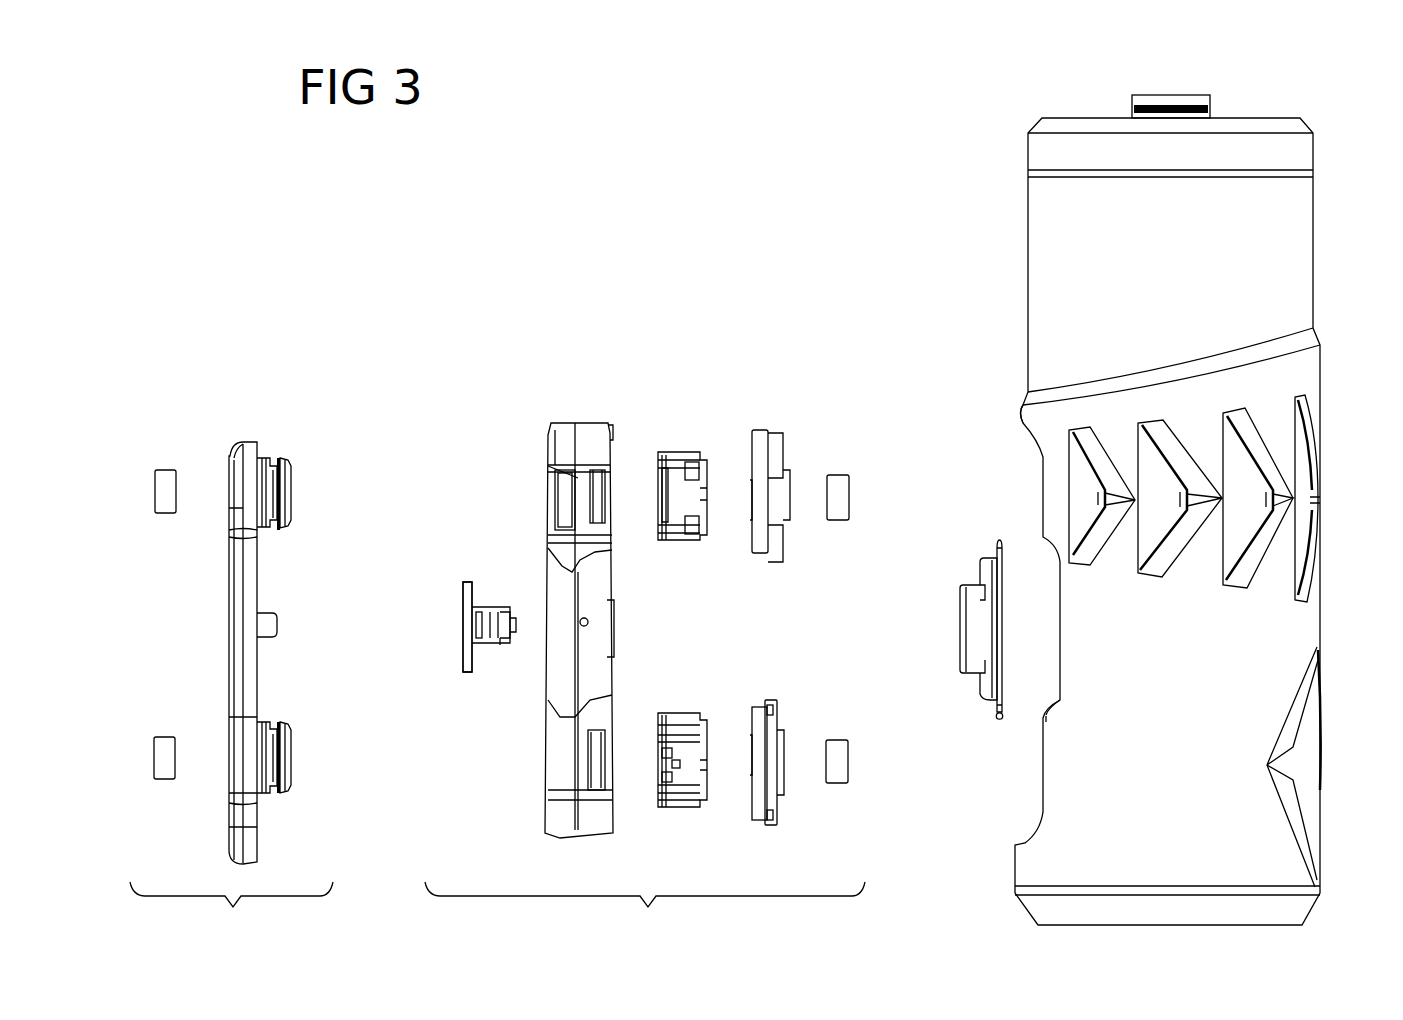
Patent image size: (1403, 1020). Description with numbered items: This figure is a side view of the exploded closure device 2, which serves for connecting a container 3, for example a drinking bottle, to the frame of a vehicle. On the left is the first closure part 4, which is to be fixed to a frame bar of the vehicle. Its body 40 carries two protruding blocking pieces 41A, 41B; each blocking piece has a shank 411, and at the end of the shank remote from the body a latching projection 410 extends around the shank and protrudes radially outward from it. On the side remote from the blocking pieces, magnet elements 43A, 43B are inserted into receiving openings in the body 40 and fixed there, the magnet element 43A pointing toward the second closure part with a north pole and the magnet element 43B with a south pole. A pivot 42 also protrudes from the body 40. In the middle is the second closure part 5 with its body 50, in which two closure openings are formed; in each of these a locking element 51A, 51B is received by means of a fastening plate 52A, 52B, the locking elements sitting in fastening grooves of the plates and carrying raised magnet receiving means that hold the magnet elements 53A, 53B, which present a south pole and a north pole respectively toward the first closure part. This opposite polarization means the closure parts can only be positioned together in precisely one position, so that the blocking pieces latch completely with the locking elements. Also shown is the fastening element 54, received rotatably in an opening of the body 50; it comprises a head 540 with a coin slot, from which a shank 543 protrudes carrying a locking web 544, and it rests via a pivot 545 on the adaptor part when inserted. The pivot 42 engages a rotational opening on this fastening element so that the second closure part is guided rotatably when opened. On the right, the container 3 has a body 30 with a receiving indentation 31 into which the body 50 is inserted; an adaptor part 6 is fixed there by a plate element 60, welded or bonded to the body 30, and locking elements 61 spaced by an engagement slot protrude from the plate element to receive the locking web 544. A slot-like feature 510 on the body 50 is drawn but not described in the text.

The closure device 2 is at (646, 282).
The container 3 is at (1297, 272).
The body 30 is at (1290, 621).
The receiving indentation 31 is at (1023, 430).
The first closure part 4 is at (231, 913).
The body 40 is at (237, 452).
The blocking piece 41A is at (291, 460).
The blocking piece 41B is at (290, 734).
The latching projection 410 is at (288, 526).
The shank 411 is at (276, 456).
The pivot 42 is at (278, 626).
The magnet element 43A is at (163, 497).
The magnet element 43B is at (163, 765).
The second closure part 5 is at (645, 914).
The body 50 is at (578, 425).
The lock body slot 510 is at (664, 500).
The locking element 51A is at (690, 452).
The locking element 51B is at (683, 722).
The fastening plate 52A is at (774, 440).
The fastening plate 52B is at (771, 698).
The magnet element 53A is at (836, 482).
The magnet element 53B is at (836, 745).
The fastening element 54 is at (463, 692).
The head 540 is at (466, 582).
The shank 543 is at (488, 607).
The locking web 544 is at (505, 646).
The pivot 545 is at (513, 612).
The adaptor part 6 is at (982, 732).
The plate element 60 is at (999, 722).
The locking elements 61 is at (975, 590).